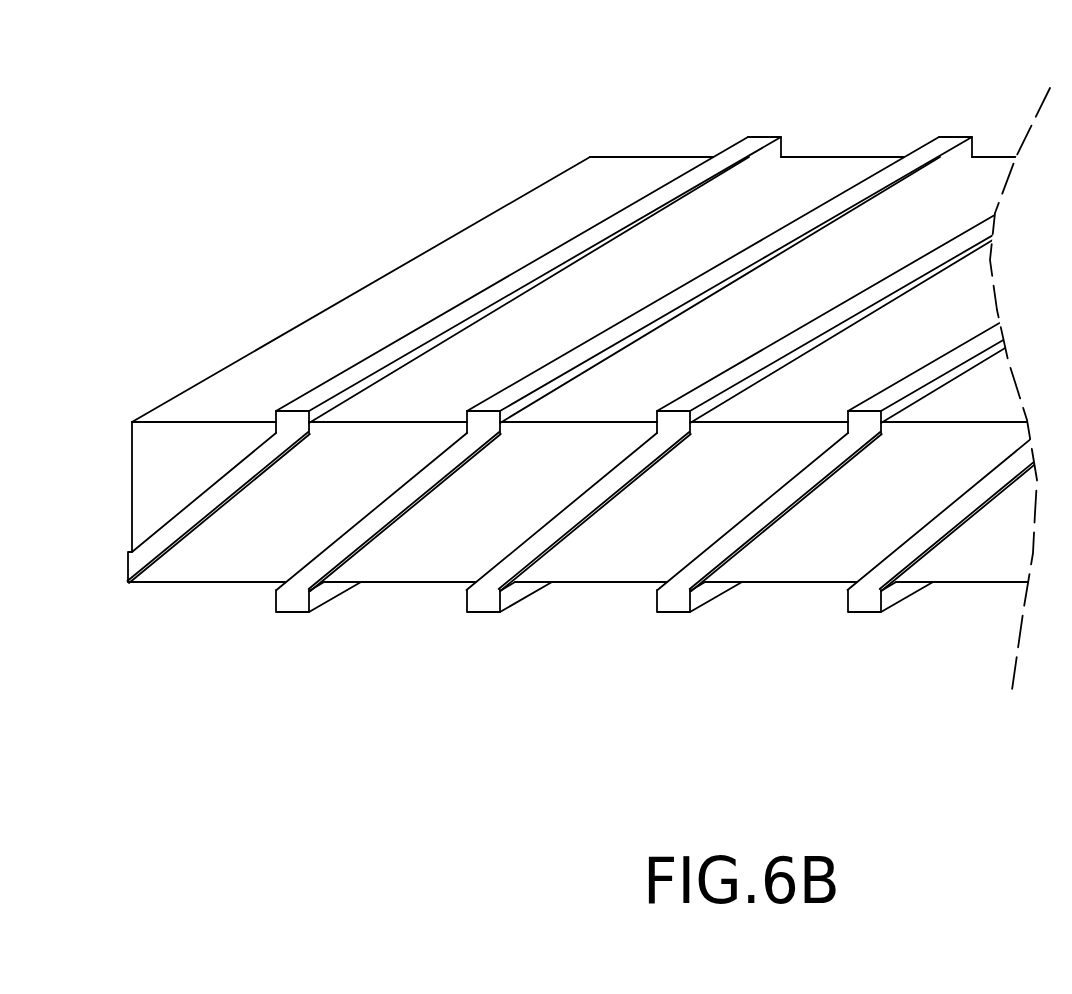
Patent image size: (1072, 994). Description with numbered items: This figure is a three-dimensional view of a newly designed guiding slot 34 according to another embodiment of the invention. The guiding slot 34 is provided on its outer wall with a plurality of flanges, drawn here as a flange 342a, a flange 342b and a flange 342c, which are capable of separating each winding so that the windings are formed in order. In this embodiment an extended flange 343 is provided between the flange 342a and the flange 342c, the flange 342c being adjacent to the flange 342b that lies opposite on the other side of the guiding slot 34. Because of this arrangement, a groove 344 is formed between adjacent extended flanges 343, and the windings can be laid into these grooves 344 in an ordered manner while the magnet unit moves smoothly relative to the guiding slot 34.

The guiding slot 34 is at (435, 266).
The flange 342a is at (941, 148).
The flange 342b is at (483, 598).
The flange 342c is at (293, 598).
The extended flange 343 is at (210, 495).
The groove 344 is at (230, 552).